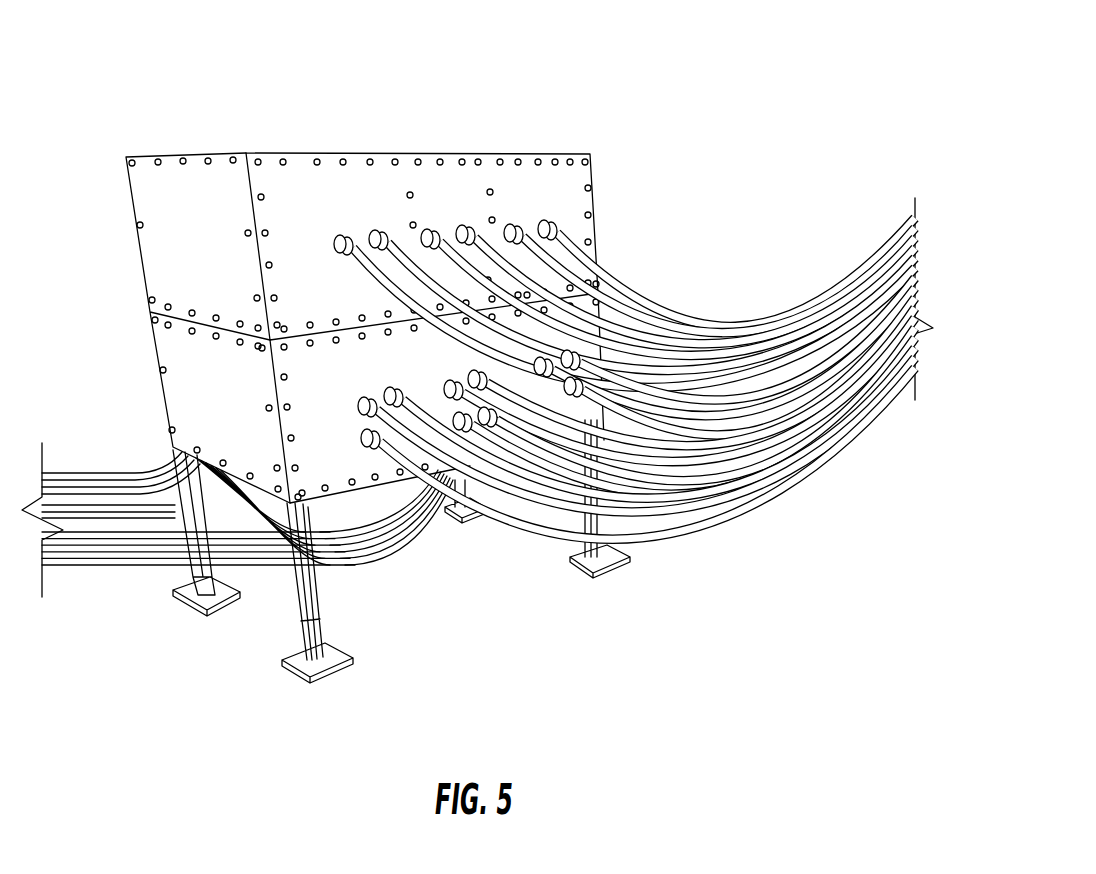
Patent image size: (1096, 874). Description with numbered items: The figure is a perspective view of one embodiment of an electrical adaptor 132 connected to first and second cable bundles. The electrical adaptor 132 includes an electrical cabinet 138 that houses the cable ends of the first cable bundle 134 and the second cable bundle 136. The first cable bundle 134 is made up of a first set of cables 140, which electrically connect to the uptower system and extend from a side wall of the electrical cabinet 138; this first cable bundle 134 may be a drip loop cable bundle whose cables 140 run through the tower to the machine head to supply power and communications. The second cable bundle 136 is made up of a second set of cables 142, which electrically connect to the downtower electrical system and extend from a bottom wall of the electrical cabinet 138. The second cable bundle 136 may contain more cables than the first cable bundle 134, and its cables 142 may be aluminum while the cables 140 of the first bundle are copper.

The electrical adaptor 132 is at (296, 190).
The second set of cables 142 is at (157, 550).
The electrical cabinet 138 is at (180, 202).
The first cable bundle 134 is at (821, 309).
The first set of cables 140 is at (896, 272).
The second cable bundle 136 is at (248, 556).